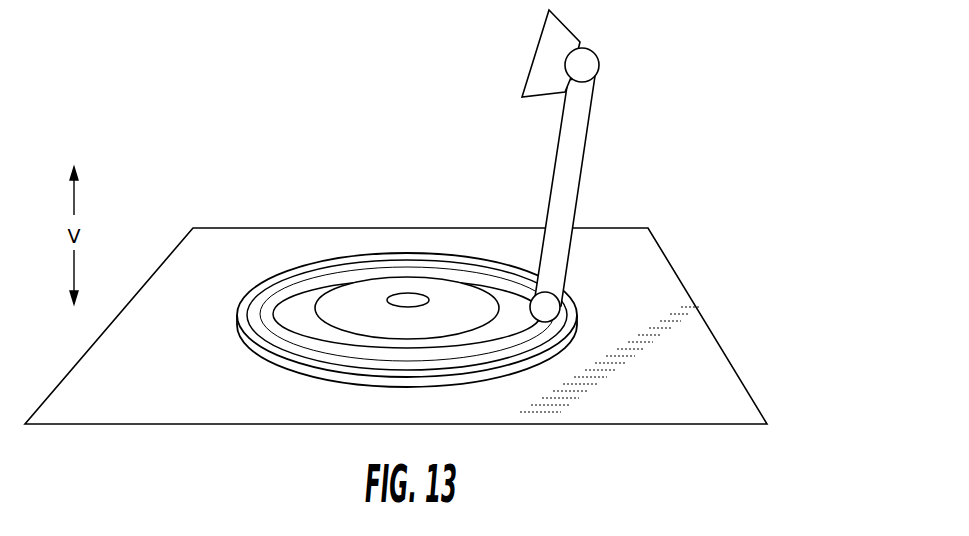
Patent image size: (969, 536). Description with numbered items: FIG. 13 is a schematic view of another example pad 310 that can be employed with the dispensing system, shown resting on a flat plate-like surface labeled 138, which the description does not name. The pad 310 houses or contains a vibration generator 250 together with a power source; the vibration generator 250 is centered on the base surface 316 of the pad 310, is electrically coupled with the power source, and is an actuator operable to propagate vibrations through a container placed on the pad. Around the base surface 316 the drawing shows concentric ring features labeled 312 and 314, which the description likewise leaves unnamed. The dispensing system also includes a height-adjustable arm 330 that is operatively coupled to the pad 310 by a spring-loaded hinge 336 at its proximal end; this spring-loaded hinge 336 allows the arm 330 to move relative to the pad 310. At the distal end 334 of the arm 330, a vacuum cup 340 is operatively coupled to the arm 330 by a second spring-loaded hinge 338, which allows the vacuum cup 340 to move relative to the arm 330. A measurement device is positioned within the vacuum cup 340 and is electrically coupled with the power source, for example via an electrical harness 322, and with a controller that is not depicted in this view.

The plate / substrate 138 is at (697, 371).
The vibration generator 250 is at (405, 297).
The pad 310 is at (352, 276).
The outer rim 312 is at (240, 322).
The inner ring 314 is at (325, 342).
The base surface 316 is at (440, 290).
The electrical harness 322 is at (637, 264).
The height-adjustable arm 330 is at (578, 172).
The distal end 334 is at (655, 69).
The spring-loaded hinge 336 is at (555, 307).
The spring-loaded hinge 338 is at (603, 55).
The vacuum cup 340 is at (529, 66).